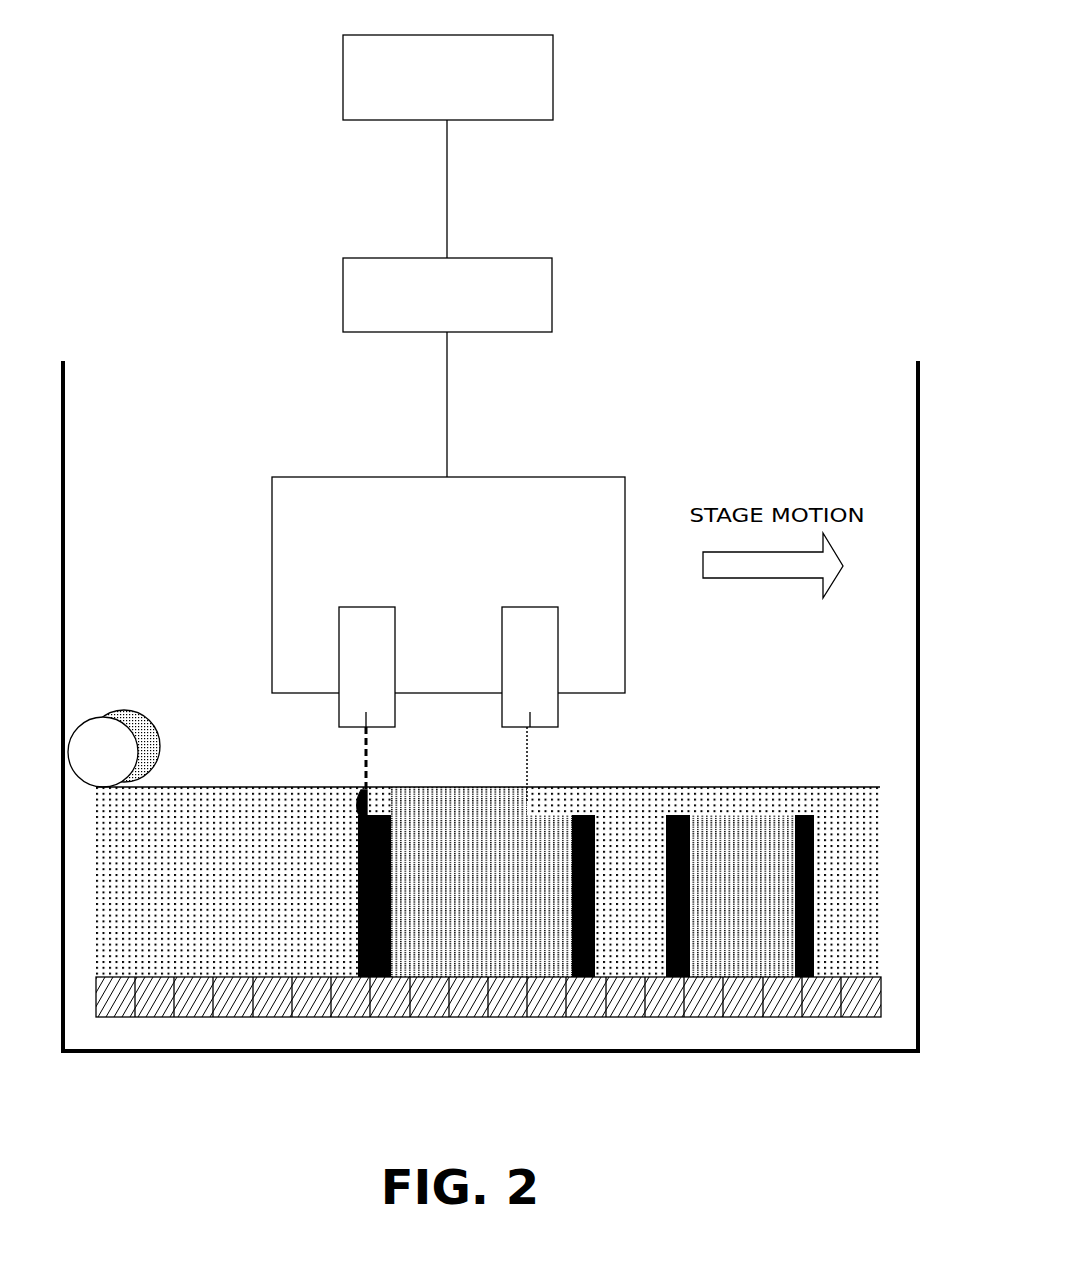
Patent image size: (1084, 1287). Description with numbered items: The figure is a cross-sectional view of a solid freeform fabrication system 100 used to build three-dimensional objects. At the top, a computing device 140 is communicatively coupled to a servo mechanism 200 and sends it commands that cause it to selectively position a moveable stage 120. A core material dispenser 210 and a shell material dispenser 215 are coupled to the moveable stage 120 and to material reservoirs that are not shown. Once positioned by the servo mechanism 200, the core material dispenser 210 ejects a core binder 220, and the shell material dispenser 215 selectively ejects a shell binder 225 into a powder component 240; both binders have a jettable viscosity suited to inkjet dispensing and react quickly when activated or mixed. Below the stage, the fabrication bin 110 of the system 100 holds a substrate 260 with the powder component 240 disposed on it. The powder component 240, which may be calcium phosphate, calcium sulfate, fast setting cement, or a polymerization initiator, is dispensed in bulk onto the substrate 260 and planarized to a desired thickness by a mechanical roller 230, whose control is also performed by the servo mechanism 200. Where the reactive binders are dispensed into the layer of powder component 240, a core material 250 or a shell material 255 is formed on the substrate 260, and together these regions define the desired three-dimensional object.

The solid freeform fabrication system 100 is at (792, 200).
The fabrication bin 110 is at (106, 352).
The moveable stage 120 is at (428, 528).
The computing device 140 is at (553, 76).
The servo mechanism 200 is at (552, 295).
The core material dispenser 210 is at (559, 640).
The shell material dispenser 215 is at (338, 632).
The core binder 220 is at (529, 757).
The shell binder 225 is at (368, 758).
The mechanical roller 230 is at (115, 733).
The powder component 240 is at (183, 787).
The core material 250 is at (742, 813).
The shell material 255 is at (358, 860).
The substrate 260 is at (623, 1034).